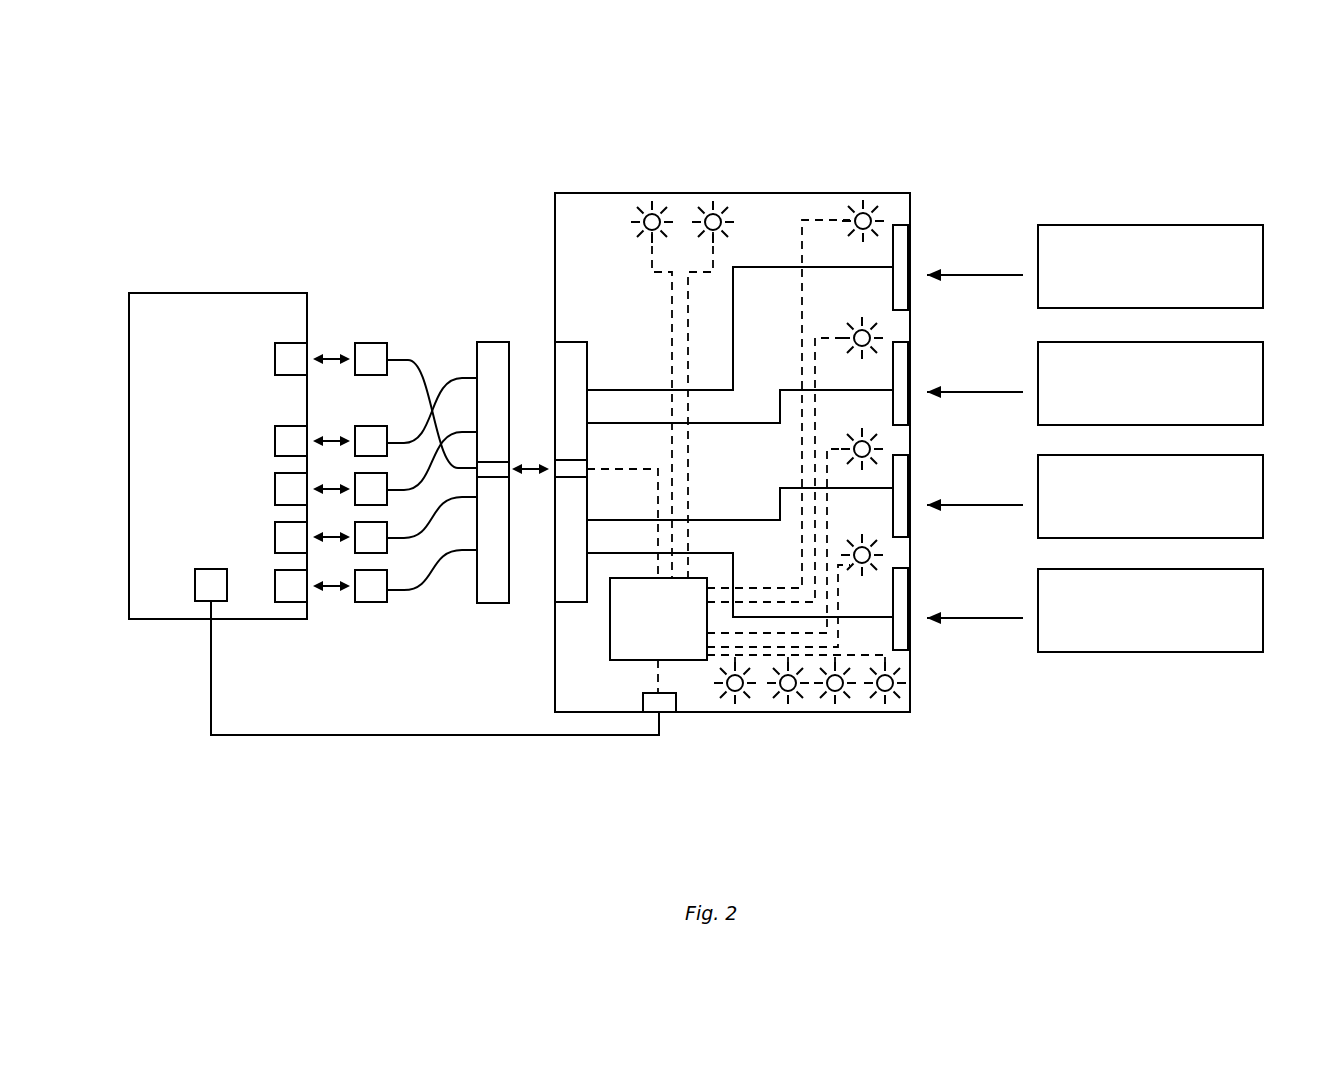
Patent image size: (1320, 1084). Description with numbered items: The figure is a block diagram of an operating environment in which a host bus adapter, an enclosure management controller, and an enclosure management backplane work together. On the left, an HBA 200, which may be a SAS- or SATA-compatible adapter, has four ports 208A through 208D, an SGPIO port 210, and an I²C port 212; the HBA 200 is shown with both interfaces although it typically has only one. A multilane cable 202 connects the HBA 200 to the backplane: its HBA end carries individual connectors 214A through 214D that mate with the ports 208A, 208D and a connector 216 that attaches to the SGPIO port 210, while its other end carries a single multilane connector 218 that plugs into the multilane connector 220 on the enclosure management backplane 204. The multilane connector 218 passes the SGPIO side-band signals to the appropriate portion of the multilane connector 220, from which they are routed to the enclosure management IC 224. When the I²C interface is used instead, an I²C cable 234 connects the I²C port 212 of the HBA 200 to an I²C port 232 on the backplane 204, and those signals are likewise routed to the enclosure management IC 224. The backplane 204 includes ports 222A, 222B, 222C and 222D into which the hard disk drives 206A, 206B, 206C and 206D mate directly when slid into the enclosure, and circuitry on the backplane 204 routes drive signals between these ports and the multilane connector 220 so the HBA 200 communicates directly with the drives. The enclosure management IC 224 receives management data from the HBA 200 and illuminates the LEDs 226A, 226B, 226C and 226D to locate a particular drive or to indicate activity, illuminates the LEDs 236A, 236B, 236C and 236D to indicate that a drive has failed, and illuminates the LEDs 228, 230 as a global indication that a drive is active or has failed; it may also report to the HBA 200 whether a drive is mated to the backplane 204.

The HBA 200 is at (229, 282).
The multilane cable 202 is at (437, 336).
The enclosure management backplane 204 is at (792, 170).
The hard disk drive 206A is at (1158, 226).
The hard disk drive 206B is at (1042, 350).
The hard disk drive 206C is at (1042, 463).
The hard disk drive 206D is at (1151, 652).
The port 208A is at (300, 430).
The port 208D is at (290, 598).
The SGPIO port 210 is at (303, 346).
The I²C port 212 is at (199, 598).
The individual connector 214A is at (363, 441).
The individual connector 214D is at (372, 598).
The connector 216 is at (368, 348).
The multilane connector 218 is at (491, 604).
The multilane connector 220 is at (588, 344).
The port 222A is at (910, 249).
The port 222B is at (910, 381).
The port 222C is at (910, 497).
The port 222D is at (910, 605).
The enclosure management IC 224 is at (611, 653).
The LED 226A is at (868, 214).
The LED 226B is at (876, 337).
The LED 226C is at (876, 449).
The LED 226D is at (876, 557).
The LED 228 is at (659, 206).
The LED 230 is at (716, 206).
The I²C port 232 is at (668, 704).
The I²C cable 234 is at (523, 737).
The LED 236A is at (732, 702).
The LED 236B is at (785, 702).
The LED 236C is at (836, 702).
The LED 236D is at (888, 702).